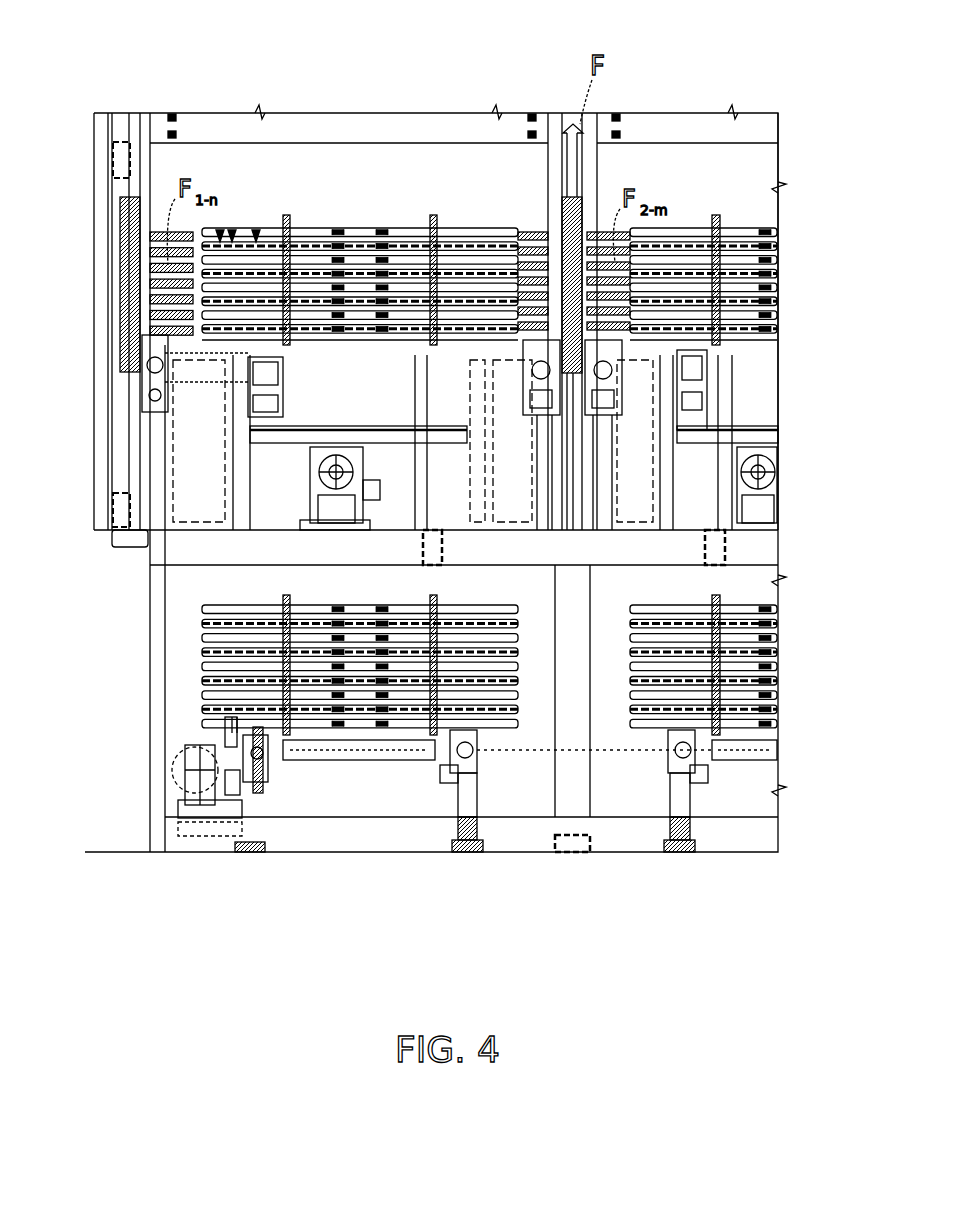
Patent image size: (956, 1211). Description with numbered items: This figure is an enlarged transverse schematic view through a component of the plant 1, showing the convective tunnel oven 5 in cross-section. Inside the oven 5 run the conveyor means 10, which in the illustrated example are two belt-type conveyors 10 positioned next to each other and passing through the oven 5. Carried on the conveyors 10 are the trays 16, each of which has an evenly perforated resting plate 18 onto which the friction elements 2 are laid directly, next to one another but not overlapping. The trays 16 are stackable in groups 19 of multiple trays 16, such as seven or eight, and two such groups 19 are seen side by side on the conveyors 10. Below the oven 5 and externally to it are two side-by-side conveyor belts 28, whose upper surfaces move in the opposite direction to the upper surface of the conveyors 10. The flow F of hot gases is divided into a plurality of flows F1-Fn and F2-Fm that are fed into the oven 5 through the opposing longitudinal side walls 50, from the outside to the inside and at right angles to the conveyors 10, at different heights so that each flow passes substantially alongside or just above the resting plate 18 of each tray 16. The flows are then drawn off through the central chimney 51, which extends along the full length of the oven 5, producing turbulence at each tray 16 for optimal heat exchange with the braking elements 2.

The plant 1 is at (790, 84).
The friction elements 2 is at (257, 229).
The convective tunnel oven 5 is at (765, 156).
The conveyor means 10 is at (271, 452).
The trays 16 is at (410, 290).
The resting plate 18 is at (320, 236).
The groups 19 is at (463, 204).
The conveyor belts 28 is at (385, 774).
The longitudinal side walls 50 is at (105, 371).
The central chimney 51 is at (555, 138).